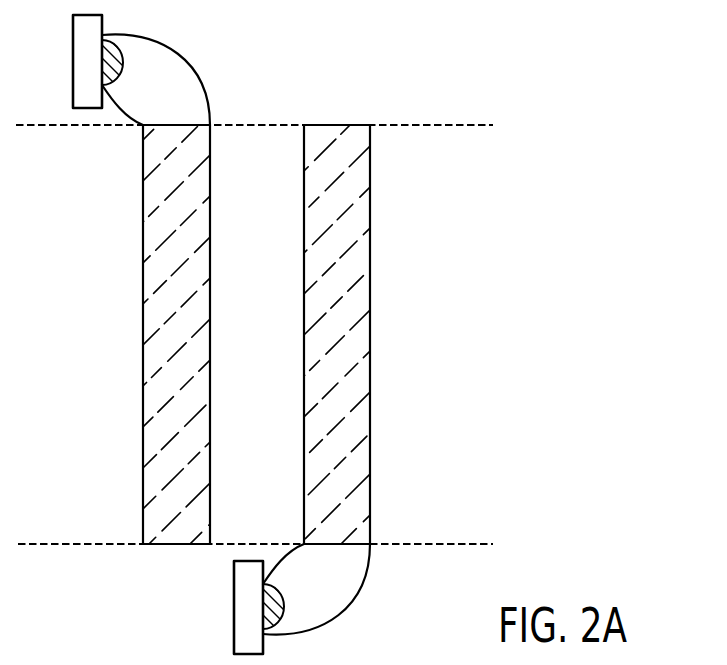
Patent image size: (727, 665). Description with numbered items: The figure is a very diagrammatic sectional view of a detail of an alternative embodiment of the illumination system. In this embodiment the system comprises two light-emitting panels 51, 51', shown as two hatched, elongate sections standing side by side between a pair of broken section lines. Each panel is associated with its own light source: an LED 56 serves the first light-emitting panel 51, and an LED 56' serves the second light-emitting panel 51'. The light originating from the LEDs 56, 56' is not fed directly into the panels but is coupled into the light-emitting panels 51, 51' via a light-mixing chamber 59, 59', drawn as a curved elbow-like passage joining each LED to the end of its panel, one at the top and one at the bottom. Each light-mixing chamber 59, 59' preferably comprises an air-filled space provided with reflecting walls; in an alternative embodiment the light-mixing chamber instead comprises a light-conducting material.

The light-emitting panel 51 is at (148, 332).
The light-emitting panel 51' is at (370, 322).
The LED 56 is at (142, 61).
The LED 56' is at (314, 607).
The light-mixing chamber 59 is at (181, 79).
The light-mixing chamber 59' is at (354, 589).